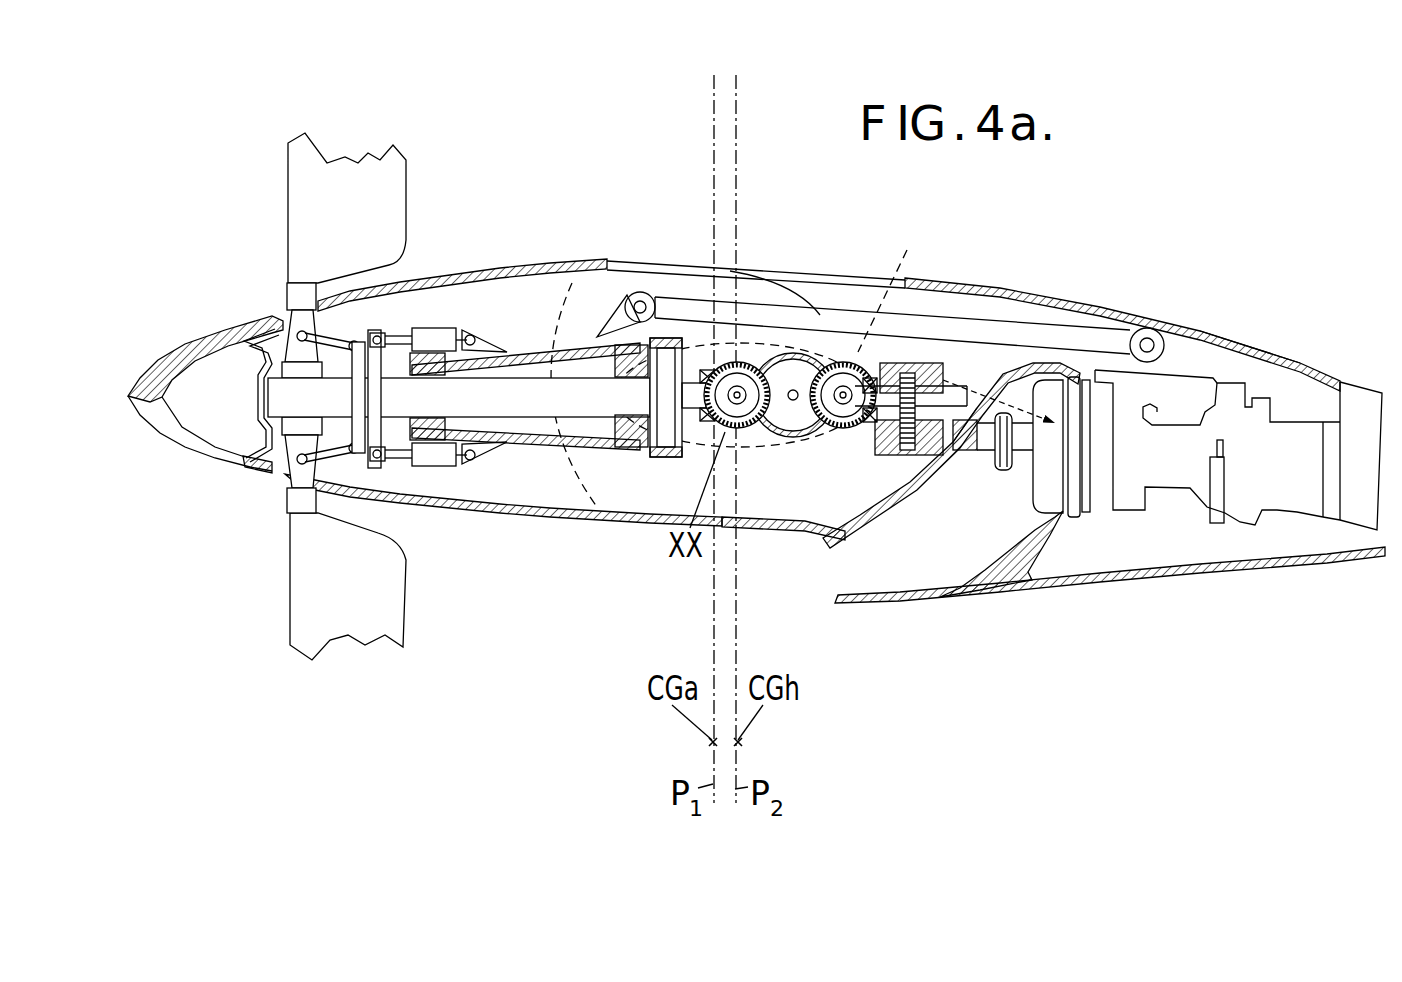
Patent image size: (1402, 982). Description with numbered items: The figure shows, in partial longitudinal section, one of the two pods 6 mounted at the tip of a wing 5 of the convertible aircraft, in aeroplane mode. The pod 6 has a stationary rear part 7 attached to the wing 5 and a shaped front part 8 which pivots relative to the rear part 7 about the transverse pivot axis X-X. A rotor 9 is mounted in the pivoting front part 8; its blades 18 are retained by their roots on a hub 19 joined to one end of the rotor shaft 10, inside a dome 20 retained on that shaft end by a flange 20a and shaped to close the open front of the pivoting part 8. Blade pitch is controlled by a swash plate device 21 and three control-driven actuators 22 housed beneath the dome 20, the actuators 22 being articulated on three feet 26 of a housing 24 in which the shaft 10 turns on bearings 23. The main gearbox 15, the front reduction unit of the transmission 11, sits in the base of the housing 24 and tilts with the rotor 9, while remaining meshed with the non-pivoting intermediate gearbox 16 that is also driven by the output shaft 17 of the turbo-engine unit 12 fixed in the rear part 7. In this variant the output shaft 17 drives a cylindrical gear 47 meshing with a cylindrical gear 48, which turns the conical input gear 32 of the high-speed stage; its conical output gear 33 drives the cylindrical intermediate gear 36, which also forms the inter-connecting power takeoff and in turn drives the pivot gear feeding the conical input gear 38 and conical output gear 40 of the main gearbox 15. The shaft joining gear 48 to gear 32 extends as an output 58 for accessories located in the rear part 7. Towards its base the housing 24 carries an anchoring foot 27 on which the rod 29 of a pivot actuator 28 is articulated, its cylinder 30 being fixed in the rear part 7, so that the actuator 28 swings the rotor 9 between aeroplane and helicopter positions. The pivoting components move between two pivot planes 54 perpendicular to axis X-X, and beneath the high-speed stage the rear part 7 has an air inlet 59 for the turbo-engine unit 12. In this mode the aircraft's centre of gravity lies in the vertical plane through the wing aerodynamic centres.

The wing 5 is at (860, 355).
The pod 6 is at (1262, 337).
The rear part of the pod 7 is at (1267, 568).
The front part of the pod 8 is at (507, 513).
The rotor 9 is at (273, 262).
The shaft 10 is at (550, 407).
The transmission 11 is at (847, 457).
The turbo-engine unit 12 is at (1157, 512).
The main gearbox 15 is at (660, 463).
The intermediate gearbox 16 is at (899, 462).
The output shaft 17 is at (942, 442).
The blades 18 is at (318, 182).
The hub 19 is at (297, 425).
The dome 20 is at (153, 378).
The flange 20a is at (238, 333).
The swash plate device 21 is at (376, 321).
The actuators 22 is at (449, 326).
The bearings 23 is at (432, 427).
The housing 24 is at (551, 353).
The feet 26 is at (477, 335).
The anchoring feet 27 is at (603, 315).
The pivot actuator 28 is at (930, 313).
The rod 29 is at (813, 317).
The cylinder 30 is at (1022, 330).
The conical input gear 32 is at (852, 422).
The conical output gear 33 is at (862, 380).
The cylindrical intermediate gear 36 is at (783, 420).
The conical input gear 38 is at (740, 373).
The conical output gear 40 is at (727, 368).
The cylindrical gear 47 is at (915, 457).
The cylindrical gear 48 is at (932, 376).
The pivot planes 54 is at (622, 502).
The output 58 is at (973, 452).
The air inlet 59 is at (958, 563).